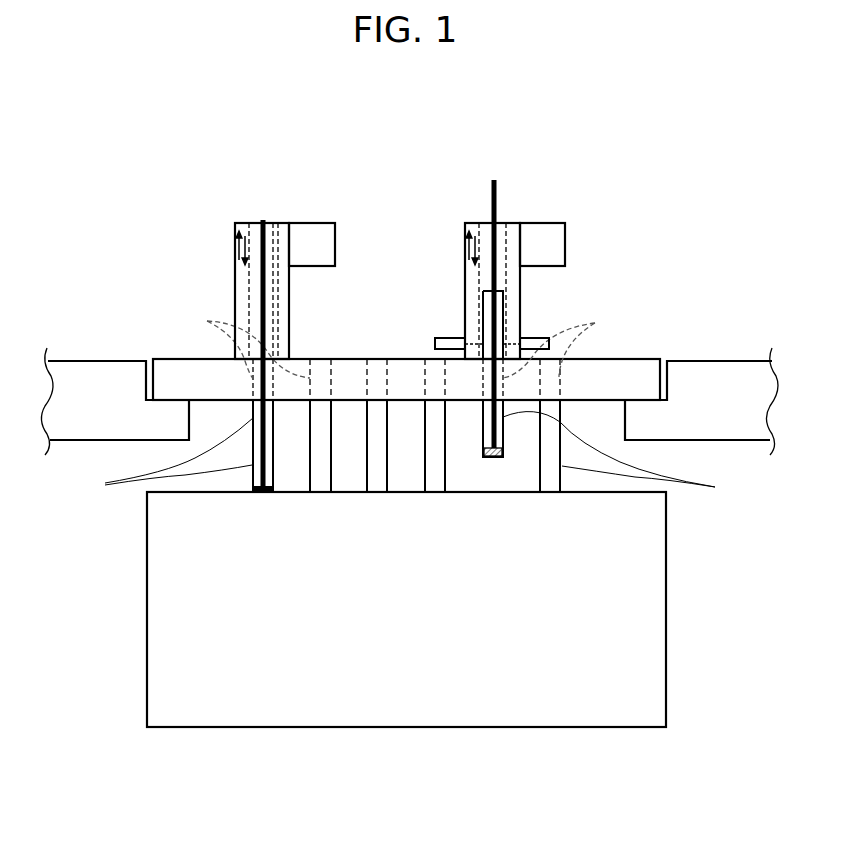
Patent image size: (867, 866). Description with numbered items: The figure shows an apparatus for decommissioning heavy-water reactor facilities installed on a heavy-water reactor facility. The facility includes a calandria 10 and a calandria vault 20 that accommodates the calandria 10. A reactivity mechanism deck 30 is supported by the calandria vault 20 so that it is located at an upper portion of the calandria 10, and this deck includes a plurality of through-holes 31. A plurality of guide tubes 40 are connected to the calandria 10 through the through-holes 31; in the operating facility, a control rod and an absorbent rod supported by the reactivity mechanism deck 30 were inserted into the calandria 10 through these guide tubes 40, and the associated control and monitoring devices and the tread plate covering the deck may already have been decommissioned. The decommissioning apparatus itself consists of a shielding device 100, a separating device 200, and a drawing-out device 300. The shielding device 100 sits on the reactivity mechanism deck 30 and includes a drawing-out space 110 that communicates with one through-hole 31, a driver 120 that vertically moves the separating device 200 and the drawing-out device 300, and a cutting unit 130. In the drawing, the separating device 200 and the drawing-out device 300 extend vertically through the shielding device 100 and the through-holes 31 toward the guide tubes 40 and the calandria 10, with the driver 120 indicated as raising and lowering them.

The calandria 10 is at (651, 606).
The calandria vault 20 is at (86, 378).
The reactivity mechanism deck 30 is at (626, 378).
The through-holes 31 is at (398, 350).
The guide tubes 40 is at (406, 454).
The shielding device 100 is at (282, 289).
The drawing-out space 110 is at (278, 242).
The driver 120 is at (330, 241).
The cutting unit 130 is at (445, 343).
The separating device 200 is at (259, 230).
The drawing-out device 300 is at (487, 201).